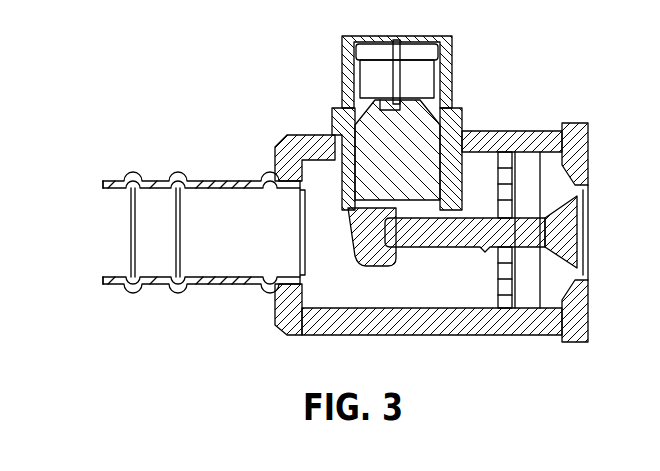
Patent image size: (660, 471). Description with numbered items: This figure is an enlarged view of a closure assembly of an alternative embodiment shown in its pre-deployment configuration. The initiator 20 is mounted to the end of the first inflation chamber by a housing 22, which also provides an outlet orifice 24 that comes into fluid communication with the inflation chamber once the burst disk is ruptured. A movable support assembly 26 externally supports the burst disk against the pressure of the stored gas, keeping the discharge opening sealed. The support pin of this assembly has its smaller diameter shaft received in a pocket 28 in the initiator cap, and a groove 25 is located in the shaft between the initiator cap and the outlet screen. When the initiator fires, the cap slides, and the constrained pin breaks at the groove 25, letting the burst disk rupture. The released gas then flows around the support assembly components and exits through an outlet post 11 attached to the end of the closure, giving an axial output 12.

The outlet post 11 is at (223, 203).
The axial output 12 is at (296, 134).
The initiator 20 is at (350, 100).
The housing 22 is at (477, 147).
The outlet orifice 24 is at (113, 283).
The groove 25 is at (500, 206).
The movable support assembly 26 is at (362, 242).
The pocket 28 is at (440, 235).